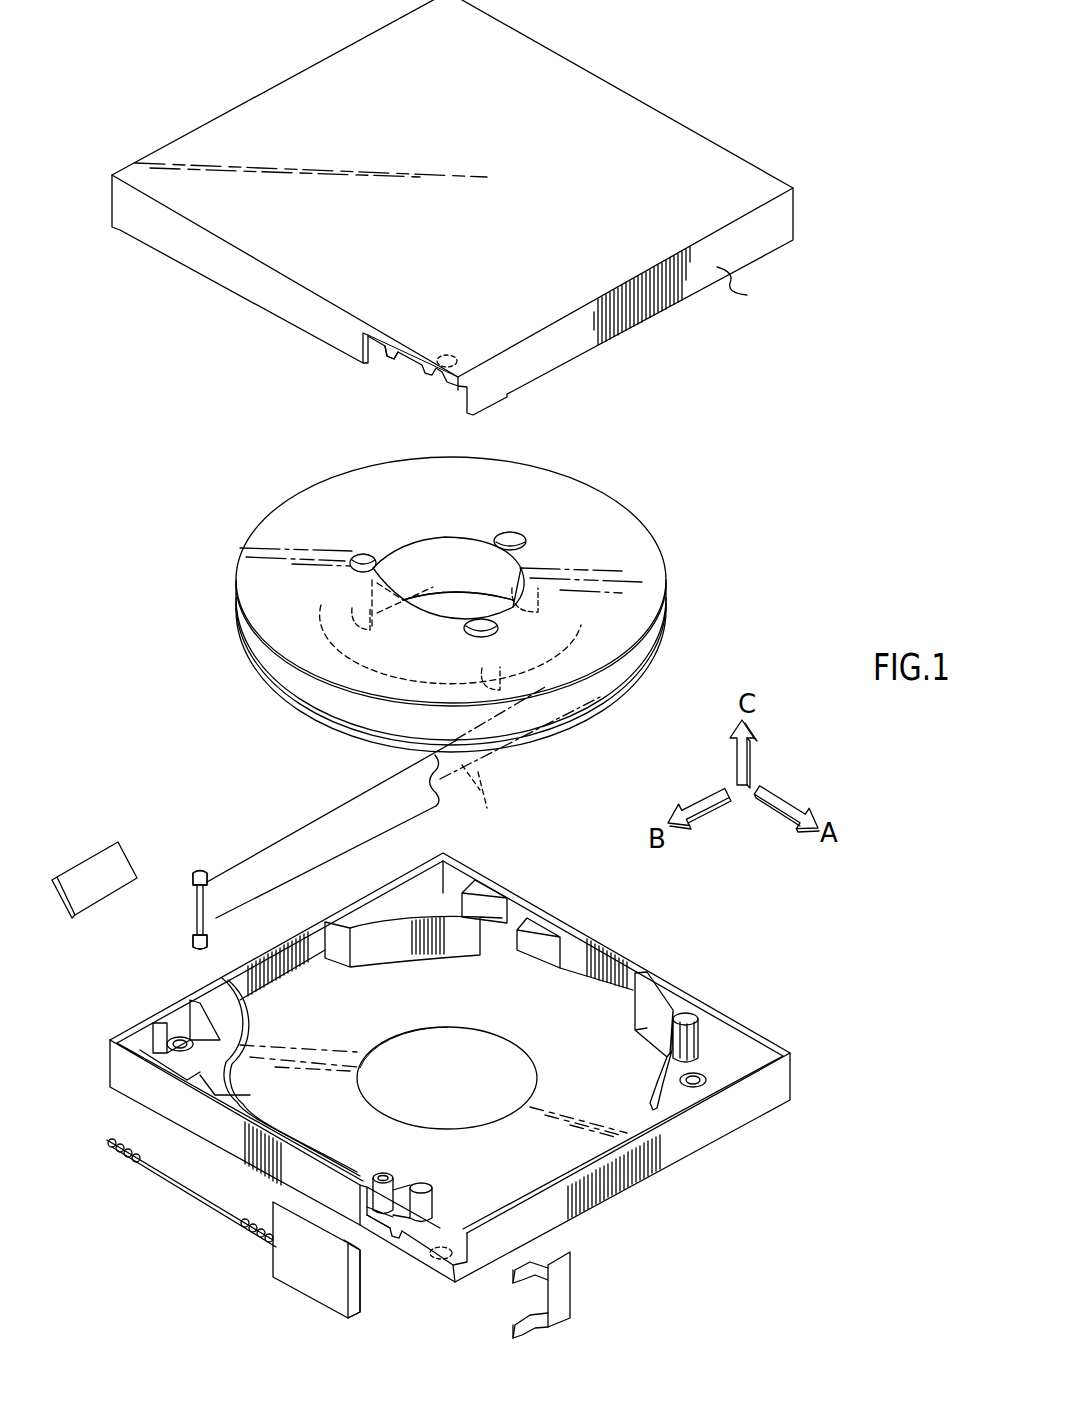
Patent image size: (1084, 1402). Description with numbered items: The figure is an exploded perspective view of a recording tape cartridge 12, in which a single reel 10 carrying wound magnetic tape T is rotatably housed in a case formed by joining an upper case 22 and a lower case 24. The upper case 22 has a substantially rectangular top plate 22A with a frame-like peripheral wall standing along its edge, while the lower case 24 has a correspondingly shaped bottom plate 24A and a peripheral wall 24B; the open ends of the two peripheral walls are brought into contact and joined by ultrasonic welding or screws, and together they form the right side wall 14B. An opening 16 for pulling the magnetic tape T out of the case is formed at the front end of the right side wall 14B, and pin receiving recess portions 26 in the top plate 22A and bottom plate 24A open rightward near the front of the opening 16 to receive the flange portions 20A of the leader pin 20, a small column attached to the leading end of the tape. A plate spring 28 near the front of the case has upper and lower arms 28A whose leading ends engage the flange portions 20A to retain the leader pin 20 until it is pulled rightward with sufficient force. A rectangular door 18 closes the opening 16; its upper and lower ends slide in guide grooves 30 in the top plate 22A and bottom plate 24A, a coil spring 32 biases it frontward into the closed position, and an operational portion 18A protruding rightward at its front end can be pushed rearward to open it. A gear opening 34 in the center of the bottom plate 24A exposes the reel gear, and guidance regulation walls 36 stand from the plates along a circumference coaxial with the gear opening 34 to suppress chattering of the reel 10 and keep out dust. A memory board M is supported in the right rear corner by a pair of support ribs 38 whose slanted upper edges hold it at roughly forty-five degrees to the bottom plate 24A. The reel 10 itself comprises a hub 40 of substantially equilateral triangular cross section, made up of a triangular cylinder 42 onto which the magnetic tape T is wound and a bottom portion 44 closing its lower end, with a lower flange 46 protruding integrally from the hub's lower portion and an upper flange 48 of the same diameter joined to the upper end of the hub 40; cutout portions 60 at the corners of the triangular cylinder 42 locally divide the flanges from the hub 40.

The reel 10 is at (482, 599).
The recording tape cartridge 12 is at (152, 425).
The right side wall 14B is at (246, 286).
The opening 16 is at (388, 355).
The door 18 is at (303, 1272).
The operational portion 18A is at (347, 1293).
The leader pin 20 is at (195, 897).
The flange portions 20A is at (198, 872).
The upper case 22 is at (687, 113).
The top plate 22A is at (528, 302).
The lower case 24 is at (449, 1096).
The bottom plate 24A is at (557, 993).
The peripheral wall 24B is at (683, 1142).
The pin receiving recess portions 26 is at (424, 370).
The plate spring 28 is at (572, 1283).
The arms 28A is at (537, 1317).
The guide grooves 30 is at (417, 1228).
The coil spring 32 is at (143, 1162).
The gear opening 34 is at (470, 1093).
The guidance regulation walls 36 is at (370, 950).
The support ribs 38 is at (190, 1017).
The hub 40 is at (492, 507).
The triangular cylinder 42 is at (450, 560).
The bottom portion 44 is at (430, 607).
The lower flange 46 is at (665, 637).
The upper flange 48 is at (640, 548).
The cutout portions 60 is at (540, 548).
The magnetic tape T is at (405, 804).
The memory board M is at (95, 868).